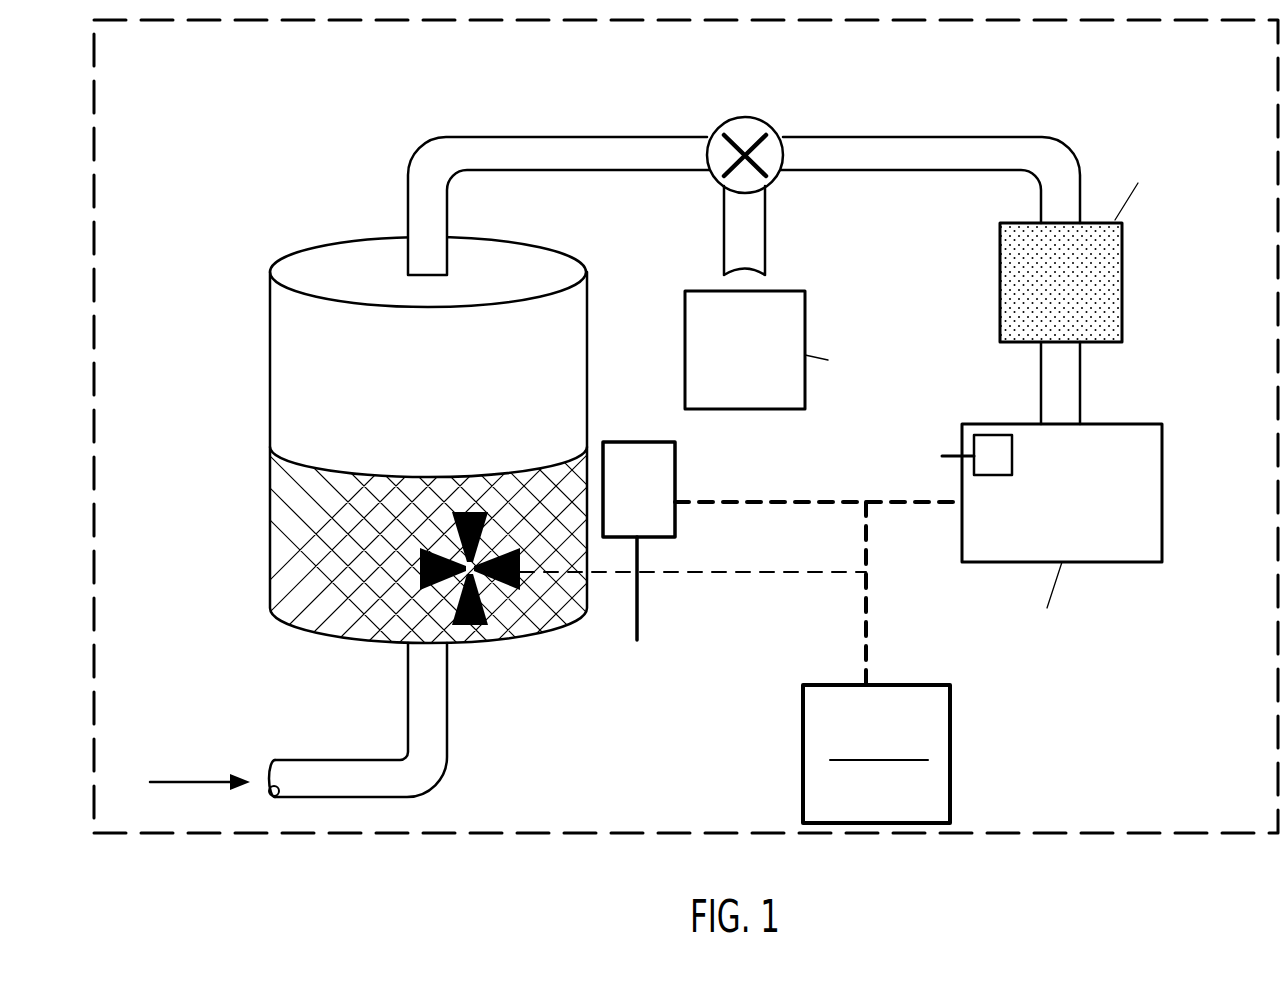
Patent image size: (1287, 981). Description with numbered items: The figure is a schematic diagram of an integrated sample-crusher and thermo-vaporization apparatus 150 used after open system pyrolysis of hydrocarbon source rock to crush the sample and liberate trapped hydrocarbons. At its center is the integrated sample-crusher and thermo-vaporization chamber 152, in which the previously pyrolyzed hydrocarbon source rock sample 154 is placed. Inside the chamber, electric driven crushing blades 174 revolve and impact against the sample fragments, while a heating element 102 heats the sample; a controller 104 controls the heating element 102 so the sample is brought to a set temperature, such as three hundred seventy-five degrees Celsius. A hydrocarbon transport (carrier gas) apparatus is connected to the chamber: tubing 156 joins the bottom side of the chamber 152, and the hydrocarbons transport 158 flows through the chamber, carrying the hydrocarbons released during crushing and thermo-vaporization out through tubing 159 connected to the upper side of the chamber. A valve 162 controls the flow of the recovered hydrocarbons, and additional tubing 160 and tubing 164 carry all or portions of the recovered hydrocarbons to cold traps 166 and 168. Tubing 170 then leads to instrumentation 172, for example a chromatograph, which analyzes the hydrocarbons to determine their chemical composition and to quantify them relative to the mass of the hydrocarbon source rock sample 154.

The integrated sample-crusher and thermo-vaporization apparatus 150 is at (295, 124).
The integrated sample-crusher and thermo-vaporization chamber 152 is at (262, 405).
The hydrocarbon source rock sample 154 is at (288, 538).
The tubing 156 is at (407, 683).
The hydrocarbons transport 158 is at (447, 715).
The tubing 159 is at (566, 136).
The tubing 160 is at (773, 246).
The valve 162 is at (744, 116).
The tubing 164 is at (922, 136).
The cold trap 166 is at (742, 412).
The cold trap 168 is at (1122, 283).
The tubing 170 is at (1083, 393).
The instrumentation 172 is at (1100, 516).
The crushing blades 174 is at (522, 574).
The heating element 102 is at (675, 520).
The controller 104 is at (950, 735).